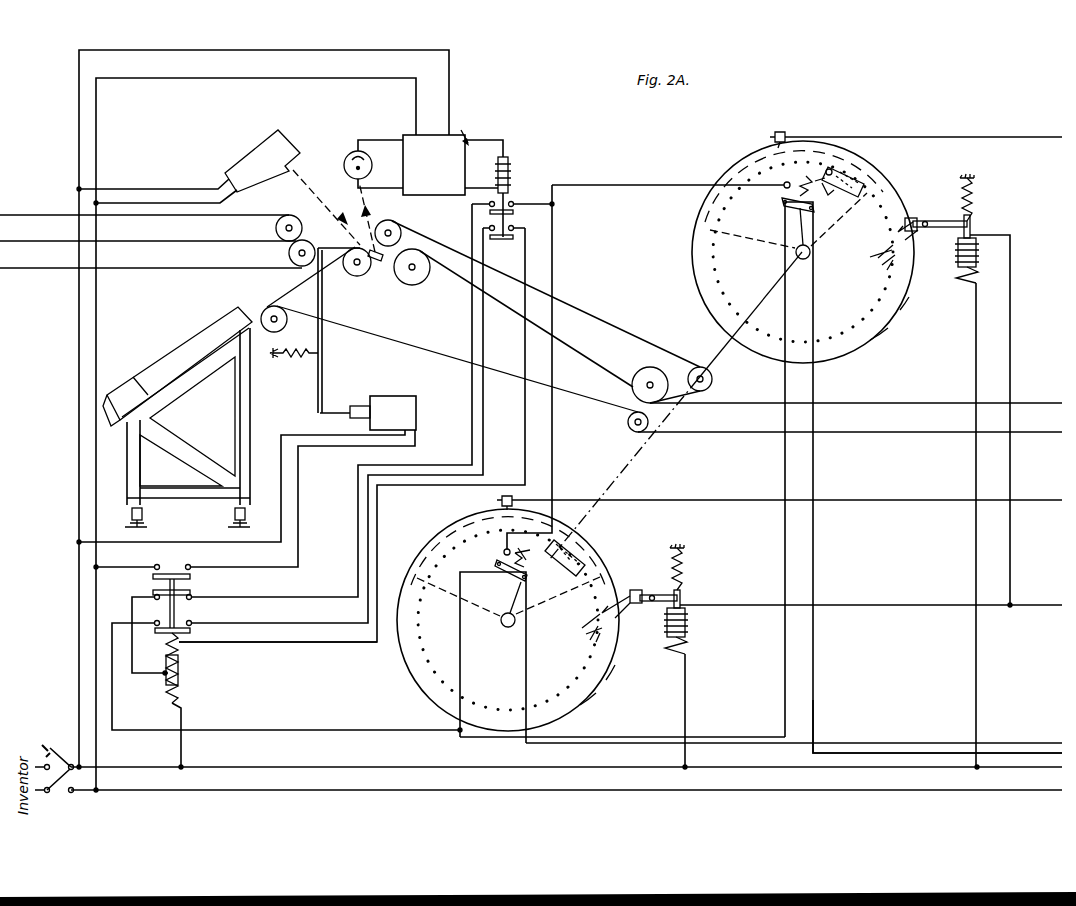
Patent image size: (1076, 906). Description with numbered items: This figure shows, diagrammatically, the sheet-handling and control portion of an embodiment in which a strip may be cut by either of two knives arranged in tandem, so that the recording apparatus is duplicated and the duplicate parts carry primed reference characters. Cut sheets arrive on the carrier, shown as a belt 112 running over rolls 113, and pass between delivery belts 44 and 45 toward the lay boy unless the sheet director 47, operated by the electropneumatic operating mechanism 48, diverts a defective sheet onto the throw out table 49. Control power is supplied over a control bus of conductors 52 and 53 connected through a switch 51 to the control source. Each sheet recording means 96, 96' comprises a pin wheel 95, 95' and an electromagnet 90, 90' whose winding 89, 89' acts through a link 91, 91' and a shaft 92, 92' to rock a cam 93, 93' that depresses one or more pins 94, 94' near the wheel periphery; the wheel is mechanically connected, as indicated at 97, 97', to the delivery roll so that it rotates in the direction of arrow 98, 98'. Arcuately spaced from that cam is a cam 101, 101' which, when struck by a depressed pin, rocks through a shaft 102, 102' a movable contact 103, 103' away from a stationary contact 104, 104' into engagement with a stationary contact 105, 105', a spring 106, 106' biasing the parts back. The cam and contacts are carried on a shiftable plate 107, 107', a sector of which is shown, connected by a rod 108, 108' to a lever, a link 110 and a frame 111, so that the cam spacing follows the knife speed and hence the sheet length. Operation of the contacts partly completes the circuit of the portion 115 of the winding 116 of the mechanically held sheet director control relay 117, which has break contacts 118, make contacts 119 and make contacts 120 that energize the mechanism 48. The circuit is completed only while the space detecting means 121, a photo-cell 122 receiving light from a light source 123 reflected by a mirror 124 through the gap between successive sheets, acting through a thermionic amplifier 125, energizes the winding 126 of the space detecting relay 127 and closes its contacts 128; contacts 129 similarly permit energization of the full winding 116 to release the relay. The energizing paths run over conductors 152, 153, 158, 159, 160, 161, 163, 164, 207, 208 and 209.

The delivery belt 44 is at (45, 210).
The delivery belt 45 is at (26, 268).
The sheet director 47 is at (315, 248).
The electropneumatic operating mechanism 48 is at (418, 408).
The throw out table 49 is at (156, 342).
The main switch 51 is at (50, 745).
The conductor 52 is at (263, 767).
The conductor 53 is at (285, 790).
The winding 89 is at (693, 631).
The winding 89' is at (952, 260).
The electromagnet 90 is at (700, 565).
The electromagnet 90' is at (993, 197).
The link 91 is at (658, 583).
The link 91' is at (940, 212).
The shaft 92 is at (657, 610).
The shaft 92' is at (949, 235).
The cam 93 is at (622, 591).
The cam 93' is at (915, 213).
The pins 94 is at (581, 628).
The pins 94' is at (870, 257).
The pin wheel 95 is at (626, 676).
The pin wheel 95' is at (920, 306).
The sheet recording means 96 is at (609, 703).
The sheet recording means 96' is at (902, 339).
The mechanical connection 97 is at (624, 469).
The mechanical connection 97' is at (735, 315).
The arrow 98 is at (591, 617).
The arrow 98' is at (877, 429).
The cam 101 is at (588, 554).
The cam 101' is at (867, 172).
The shaft 102 is at (528, 549).
The shaft 102' is at (827, 197).
The movable contact 103 is at (501, 608).
The movable contact 103' is at (802, 238).
The stationary contact 104 is at (493, 595).
The stationary contact 104' is at (770, 225).
The stationary contact 105 is at (488, 547).
The stationary contact 105' is at (762, 197).
The spring 106 is at (491, 569).
The spring 106' is at (797, 188).
The plate 107 is at (495, 551).
The plate 107' is at (777, 182).
The rod 108 is at (787, 487).
The rod 108' is at (923, 119).
The link 110 is at (907, 403).
The frame 111 is at (648, 315).
The belt 112 is at (582, 305).
The rollers 113 is at (712, 380).
The winding portion 115 is at (183, 688).
The operating winding 116 is at (183, 660).
The sheet director control relay 117 is at (157, 686).
The normally closed contacts 118 is at (190, 602).
The normally open contacts 119 is at (160, 614).
The normally open contacts 120 is at (185, 570).
The space detecting means 121 is at (492, 92).
The photo-cell 122 is at (350, 152).
The light source 123 is at (262, 150).
The mirror 124 is at (376, 263).
The thermionic amplifier 125 is at (410, 135).
The operating winding 126 is at (505, 150).
The space detecting relay 127 is at (532, 183).
The normally open contacts 128 is at (514, 205).
The normally open contacts 129 is at (514, 228).
The conductor 152 is at (1030, 605).
The conductor 153 is at (686, 692).
The conductor 158 is at (552, 448).
The conductor 159 is at (472, 442).
The conductor 160 is at (176, 645).
The conductor 161 is at (183, 716).
The conductor 163 is at (262, 628).
The conductor 164 is at (290, 662).
The conductor 207 is at (978, 660).
The conductor 208 is at (895, 743).
The conductor 209 is at (815, 650).